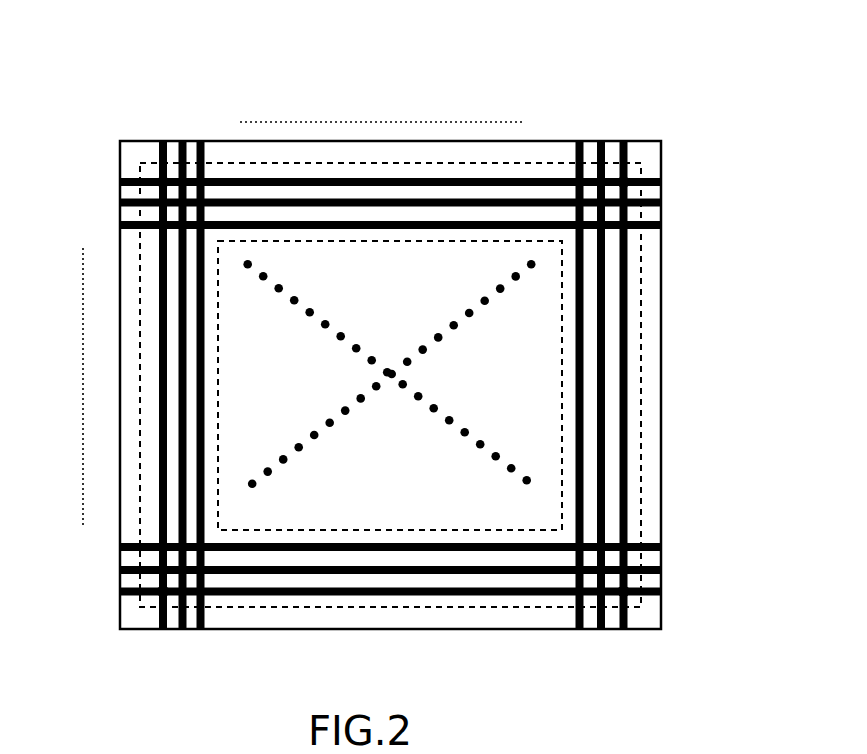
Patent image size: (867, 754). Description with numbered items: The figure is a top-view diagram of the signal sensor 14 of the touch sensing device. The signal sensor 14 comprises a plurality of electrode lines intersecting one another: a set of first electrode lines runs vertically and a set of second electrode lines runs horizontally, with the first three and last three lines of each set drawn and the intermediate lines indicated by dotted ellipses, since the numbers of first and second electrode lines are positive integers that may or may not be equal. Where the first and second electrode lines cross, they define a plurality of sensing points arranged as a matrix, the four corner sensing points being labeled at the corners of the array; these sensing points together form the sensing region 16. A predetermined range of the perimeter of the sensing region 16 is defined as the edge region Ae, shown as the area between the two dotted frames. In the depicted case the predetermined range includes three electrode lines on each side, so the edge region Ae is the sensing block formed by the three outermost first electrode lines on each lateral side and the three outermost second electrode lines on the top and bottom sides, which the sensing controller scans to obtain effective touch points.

The signal sensor 14 is at (383, 55).
The sensing region 16 is at (645, 375).
The edge region Ae is at (632, 285).